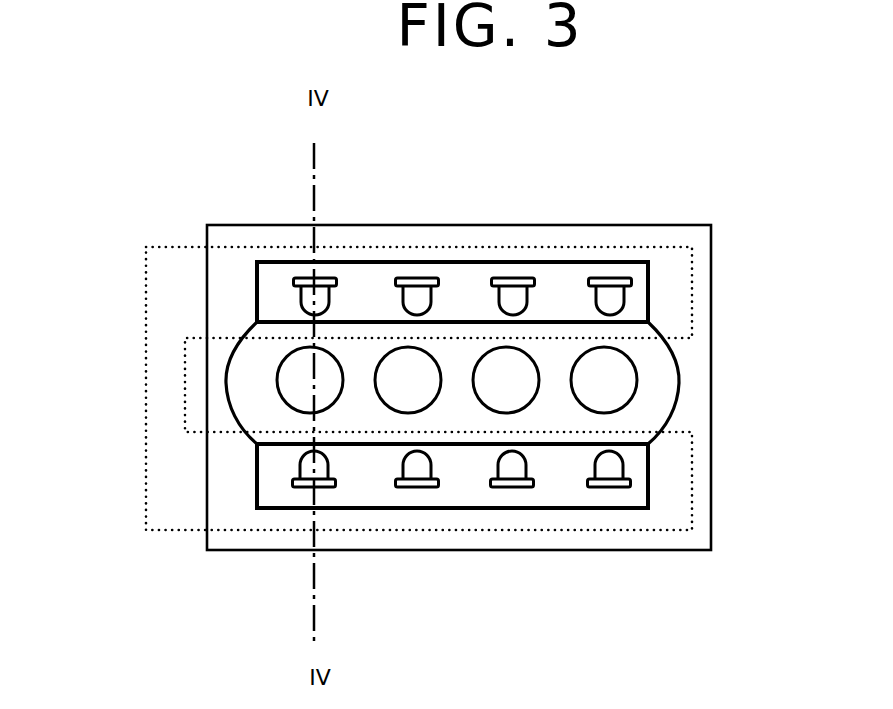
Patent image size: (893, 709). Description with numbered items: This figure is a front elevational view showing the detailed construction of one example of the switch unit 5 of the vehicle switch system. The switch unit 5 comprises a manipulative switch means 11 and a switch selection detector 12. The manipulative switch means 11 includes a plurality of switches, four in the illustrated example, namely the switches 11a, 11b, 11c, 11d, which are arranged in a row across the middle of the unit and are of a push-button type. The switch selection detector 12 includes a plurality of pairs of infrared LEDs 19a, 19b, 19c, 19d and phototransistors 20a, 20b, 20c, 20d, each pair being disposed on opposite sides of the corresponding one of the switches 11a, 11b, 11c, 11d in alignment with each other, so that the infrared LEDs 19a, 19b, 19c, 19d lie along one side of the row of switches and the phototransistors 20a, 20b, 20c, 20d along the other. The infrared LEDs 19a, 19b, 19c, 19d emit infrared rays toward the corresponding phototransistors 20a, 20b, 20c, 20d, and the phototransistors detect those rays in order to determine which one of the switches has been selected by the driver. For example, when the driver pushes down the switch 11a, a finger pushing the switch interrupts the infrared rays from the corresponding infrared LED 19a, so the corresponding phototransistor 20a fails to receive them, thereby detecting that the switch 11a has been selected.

The switch unit 5 is at (713, 327).
The switch selection detector 12 is at (144, 327).
The manipulative switch means 11 is at (447, 407).
The switch 11a is at (286, 400).
The switch 11b is at (377, 364).
The switch 11c is at (530, 357).
The switch 11d is at (620, 409).
The infrared LED 19a is at (323, 278).
The infrared LED 19b is at (423, 278).
The infrared LED 19c is at (517, 278).
The infrared LED 19d is at (612, 278).
The phototransistor 20a is at (311, 488).
The phototransistor 20b is at (422, 488).
The phototransistor 20c is at (516, 488).
The phototransistor 20d is at (613, 488).